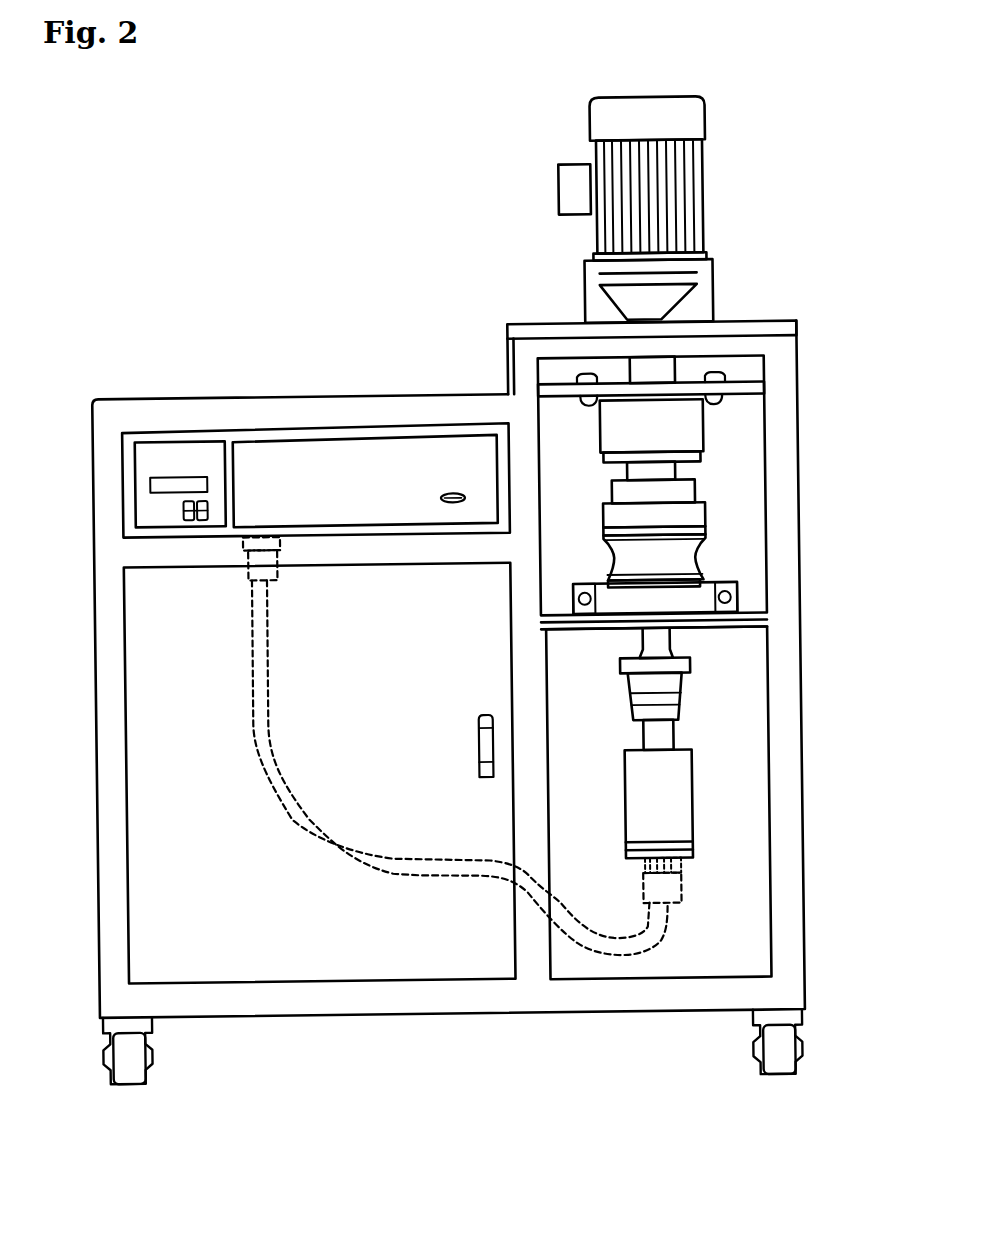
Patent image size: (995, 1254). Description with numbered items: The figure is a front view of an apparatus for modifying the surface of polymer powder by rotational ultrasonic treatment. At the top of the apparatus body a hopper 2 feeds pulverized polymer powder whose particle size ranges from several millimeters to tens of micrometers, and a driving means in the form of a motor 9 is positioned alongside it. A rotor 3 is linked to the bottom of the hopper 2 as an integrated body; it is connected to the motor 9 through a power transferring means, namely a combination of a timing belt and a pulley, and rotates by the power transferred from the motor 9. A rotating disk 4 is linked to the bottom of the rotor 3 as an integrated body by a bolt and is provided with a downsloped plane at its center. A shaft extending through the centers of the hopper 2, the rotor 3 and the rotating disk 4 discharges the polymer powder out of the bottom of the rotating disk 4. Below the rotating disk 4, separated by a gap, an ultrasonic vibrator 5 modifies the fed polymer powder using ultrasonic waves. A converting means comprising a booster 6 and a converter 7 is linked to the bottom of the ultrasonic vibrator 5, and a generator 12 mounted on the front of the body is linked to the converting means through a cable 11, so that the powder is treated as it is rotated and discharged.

The hopper 2 is at (718, 301).
The rotor 3 is at (718, 440).
The rotating disk 4 is at (702, 517).
The ultrasonic vibrator 5 is at (702, 551).
The booster 6 is at (680, 685).
The converter 7 is at (671, 806).
The motor 9 is at (712, 176).
The cable 11 is at (293, 824).
The generator 12 is at (181, 457).